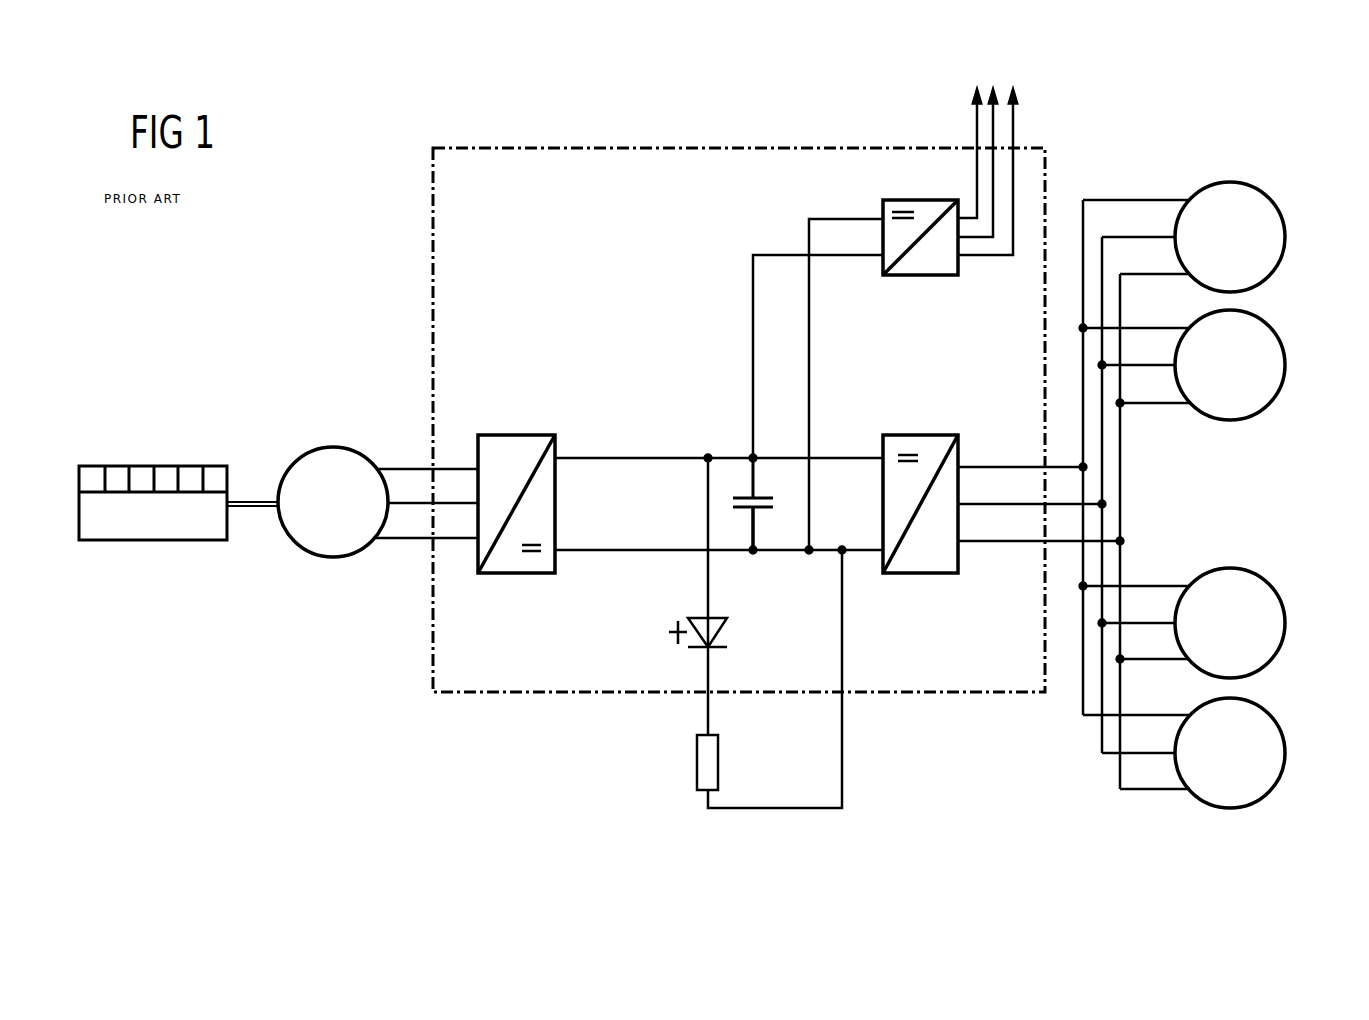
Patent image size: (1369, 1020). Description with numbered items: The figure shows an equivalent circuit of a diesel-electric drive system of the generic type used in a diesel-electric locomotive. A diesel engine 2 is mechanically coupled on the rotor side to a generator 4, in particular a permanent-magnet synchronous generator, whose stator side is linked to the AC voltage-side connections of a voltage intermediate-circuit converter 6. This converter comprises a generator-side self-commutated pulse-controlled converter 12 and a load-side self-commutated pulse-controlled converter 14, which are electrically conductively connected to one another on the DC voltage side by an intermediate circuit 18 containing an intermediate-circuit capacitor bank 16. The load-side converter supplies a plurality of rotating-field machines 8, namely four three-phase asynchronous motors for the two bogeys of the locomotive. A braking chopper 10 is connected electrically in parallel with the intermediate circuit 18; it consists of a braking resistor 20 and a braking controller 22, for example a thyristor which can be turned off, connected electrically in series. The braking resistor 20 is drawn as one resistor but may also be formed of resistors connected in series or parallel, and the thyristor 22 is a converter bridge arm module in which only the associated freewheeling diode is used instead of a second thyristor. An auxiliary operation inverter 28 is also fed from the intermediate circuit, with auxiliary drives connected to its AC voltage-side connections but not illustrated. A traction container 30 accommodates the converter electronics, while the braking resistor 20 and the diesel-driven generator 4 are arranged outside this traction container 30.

The diesel engine 2 is at (141, 466).
The generator 4 is at (330, 448).
The voltage intermediate-circuit converter 6 is at (598, 524).
The rotating-field machines 8 is at (1286, 235).
The braking chopper 10 is at (781, 633).
The generator-side self-commutated pulse-controlled converter 12 is at (497, 435).
The load-side self-commutated pulse-controlled converter 14 is at (900, 435).
The intermediate-circuit capacitor bank 16 is at (766, 492).
The intermediate circuit 18 is at (757, 525).
The braking resistor 20 is at (718, 763).
The braking controller 22 is at (727, 632).
The auxiliary operation inverter 28 is at (930, 200).
The traction container 30 is at (925, 694).